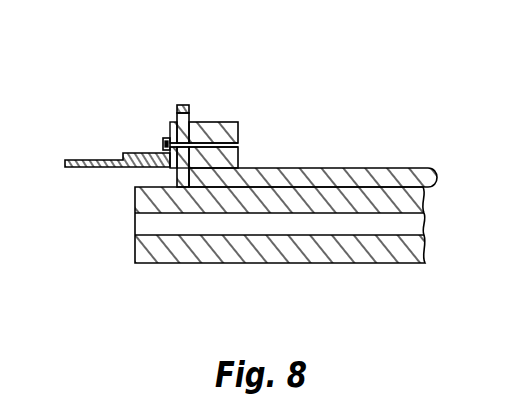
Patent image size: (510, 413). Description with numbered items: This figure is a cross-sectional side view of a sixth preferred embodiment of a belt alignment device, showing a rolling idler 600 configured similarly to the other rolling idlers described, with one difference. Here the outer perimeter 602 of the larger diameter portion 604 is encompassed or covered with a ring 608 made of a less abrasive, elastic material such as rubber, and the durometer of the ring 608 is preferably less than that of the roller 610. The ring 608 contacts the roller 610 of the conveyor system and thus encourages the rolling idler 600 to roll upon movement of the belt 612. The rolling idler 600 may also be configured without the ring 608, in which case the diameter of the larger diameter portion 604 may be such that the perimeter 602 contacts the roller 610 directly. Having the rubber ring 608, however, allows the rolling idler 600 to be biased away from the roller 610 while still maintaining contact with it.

The rolling idler 600 is at (228, 121).
The outer perimeter 602 is at (182, 178).
The larger diameter portion 604 is at (190, 119).
The ring 608 is at (183, 106).
The roller 610 is at (192, 265).
The belt 612 is at (372, 168).